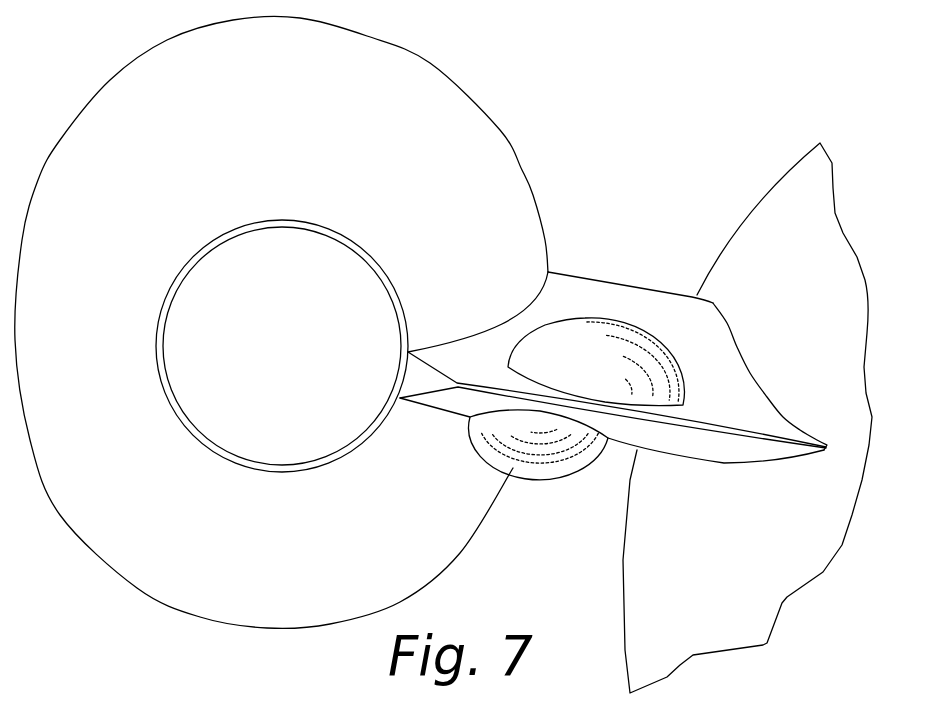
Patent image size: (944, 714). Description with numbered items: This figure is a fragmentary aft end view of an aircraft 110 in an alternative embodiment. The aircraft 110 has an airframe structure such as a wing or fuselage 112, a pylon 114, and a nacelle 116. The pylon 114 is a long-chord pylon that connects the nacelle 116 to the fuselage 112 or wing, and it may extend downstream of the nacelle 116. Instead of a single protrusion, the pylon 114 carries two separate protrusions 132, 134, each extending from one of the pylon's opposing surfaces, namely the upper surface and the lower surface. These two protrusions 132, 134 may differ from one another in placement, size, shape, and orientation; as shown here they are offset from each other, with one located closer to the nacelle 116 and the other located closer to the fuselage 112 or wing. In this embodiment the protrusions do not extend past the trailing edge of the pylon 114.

The aircraft 110 is at (799, 55).
The fuselage 112 is at (838, 263).
The pylon 114 is at (716, 447).
The nacelle 116 is at (123, 110).
The protrusion 132 is at (580, 340).
The protrusion 134 is at (571, 470).